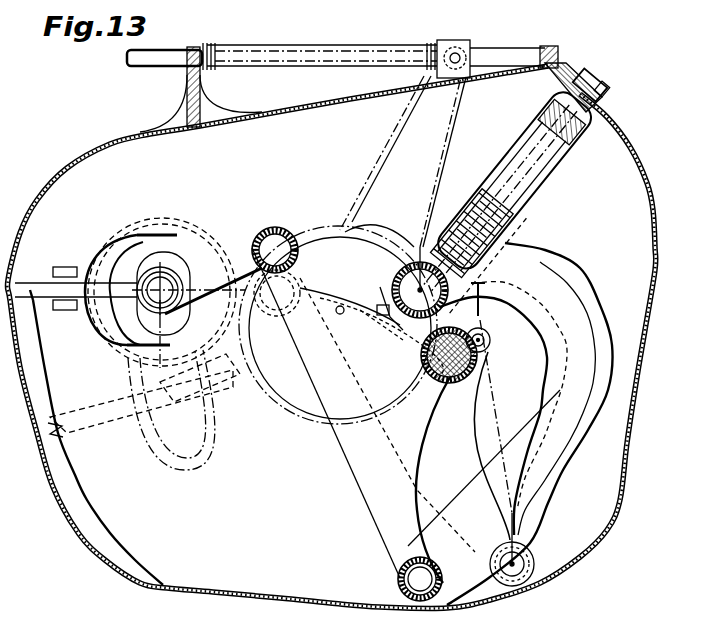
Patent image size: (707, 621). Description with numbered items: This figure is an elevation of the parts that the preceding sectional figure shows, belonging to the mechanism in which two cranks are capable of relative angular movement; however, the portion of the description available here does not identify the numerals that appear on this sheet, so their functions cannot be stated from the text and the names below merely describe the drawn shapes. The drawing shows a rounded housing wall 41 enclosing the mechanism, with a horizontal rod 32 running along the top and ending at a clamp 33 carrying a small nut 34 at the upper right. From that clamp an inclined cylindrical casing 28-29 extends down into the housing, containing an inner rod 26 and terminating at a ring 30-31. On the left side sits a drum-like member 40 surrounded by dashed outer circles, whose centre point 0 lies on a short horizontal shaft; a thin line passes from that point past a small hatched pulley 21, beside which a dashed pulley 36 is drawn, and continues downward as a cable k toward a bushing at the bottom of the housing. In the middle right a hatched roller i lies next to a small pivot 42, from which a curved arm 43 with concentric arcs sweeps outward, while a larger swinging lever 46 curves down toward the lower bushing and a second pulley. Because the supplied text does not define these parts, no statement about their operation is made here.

The control rod 32 is at (288, 60).
The clamp bracket 33 is at (571, 52).
The adjusting nut 34 is at (603, 88).
The spring rod 26 is at (533, 147).
The spring housing and coil spring 28-29 is at (531, 203).
The roller pivot 30-31 is at (411, 142).
The cam drum 40 is at (101, 253).
The guide pulley 21 is at (241, 252).
The drum axis 0 is at (252, 248).
The secondary pulley 36 is at (263, 314).
The roller i is at (421, 353).
The pivoted arm 43 is at (481, 312).
The arm pivot 42 is at (489, 346).
The swinging lever 46 is at (437, 381).
The cable k is at (373, 468).
The housing 41 is at (128, 560).